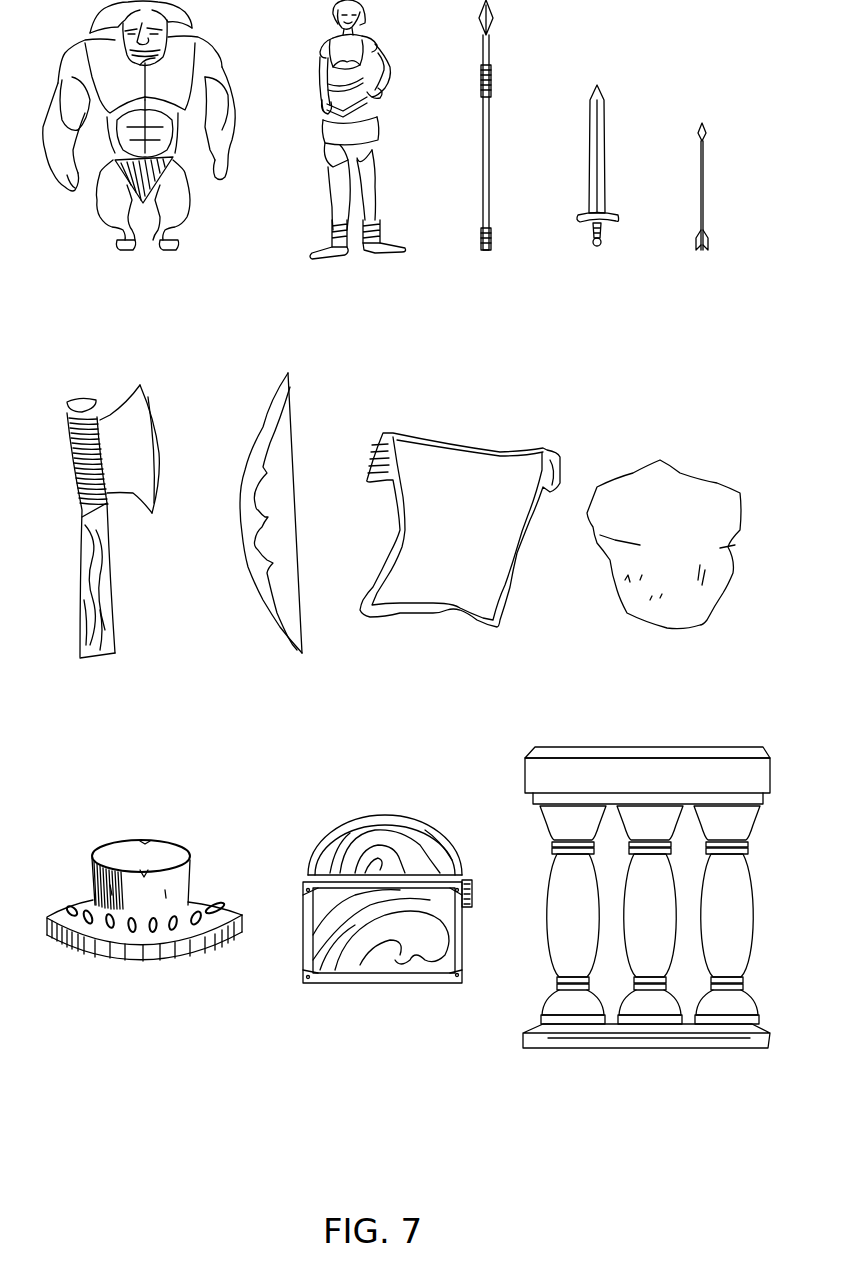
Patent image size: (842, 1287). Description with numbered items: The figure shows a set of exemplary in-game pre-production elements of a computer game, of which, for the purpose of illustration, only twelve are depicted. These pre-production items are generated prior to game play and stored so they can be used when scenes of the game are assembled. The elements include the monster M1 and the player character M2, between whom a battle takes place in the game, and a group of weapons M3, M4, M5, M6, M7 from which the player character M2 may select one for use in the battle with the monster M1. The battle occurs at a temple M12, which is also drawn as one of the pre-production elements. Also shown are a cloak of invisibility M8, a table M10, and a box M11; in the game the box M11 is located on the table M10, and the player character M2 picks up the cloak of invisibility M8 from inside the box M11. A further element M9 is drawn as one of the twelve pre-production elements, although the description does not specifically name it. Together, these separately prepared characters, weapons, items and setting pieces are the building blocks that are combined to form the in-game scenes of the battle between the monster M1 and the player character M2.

The monster M1 is at (139, 148).
The player character M2 is at (358, 148).
The weapon M3 is at (491, 148).
The weapon M4 is at (597, 190).
The weapon M5 is at (705, 212).
The weapon M6 is at (113, 554).
The weapon M7 is at (271, 541).
The cloak of invisibility M8 is at (460, 551).
The hide model M9 is at (664, 564).
The table M10 is at (144, 933).
The box M11 is at (387, 929).
The temple M12 is at (646, 924).